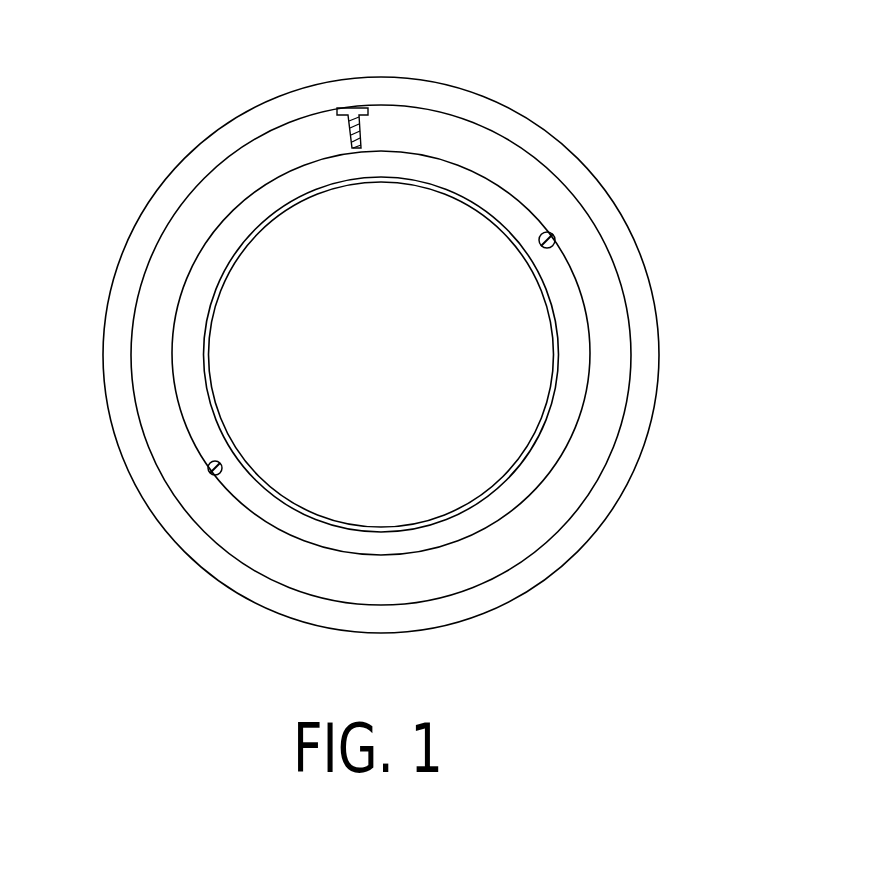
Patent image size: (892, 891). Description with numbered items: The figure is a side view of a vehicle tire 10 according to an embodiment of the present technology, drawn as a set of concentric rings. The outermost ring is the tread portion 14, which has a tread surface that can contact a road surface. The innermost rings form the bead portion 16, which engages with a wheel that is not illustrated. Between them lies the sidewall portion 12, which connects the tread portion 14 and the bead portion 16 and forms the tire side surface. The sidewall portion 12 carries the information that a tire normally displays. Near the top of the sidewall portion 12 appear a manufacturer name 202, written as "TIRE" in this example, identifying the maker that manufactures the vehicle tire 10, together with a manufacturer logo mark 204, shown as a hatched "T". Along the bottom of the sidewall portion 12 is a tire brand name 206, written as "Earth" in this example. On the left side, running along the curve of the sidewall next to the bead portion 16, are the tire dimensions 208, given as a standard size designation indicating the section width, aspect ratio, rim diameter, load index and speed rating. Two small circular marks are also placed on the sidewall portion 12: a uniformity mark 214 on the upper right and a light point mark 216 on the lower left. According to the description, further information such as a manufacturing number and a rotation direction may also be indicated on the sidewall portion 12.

The vehicle tire 10 is at (638, 81).
The sidewall portion 12 is at (543, 177).
The tread portion 14 is at (233, 119).
The bead portion 16 is at (330, 192).
The manufacturer name 202 is at (403, 117).
The manufacturer logo mark 204 is at (352, 108).
The tire brand name 206 is at (395, 590).
The tire dimensions 208 is at (180, 410).
The uniformity mark 214 is at (555, 238).
The light point mark 216 is at (209, 474).